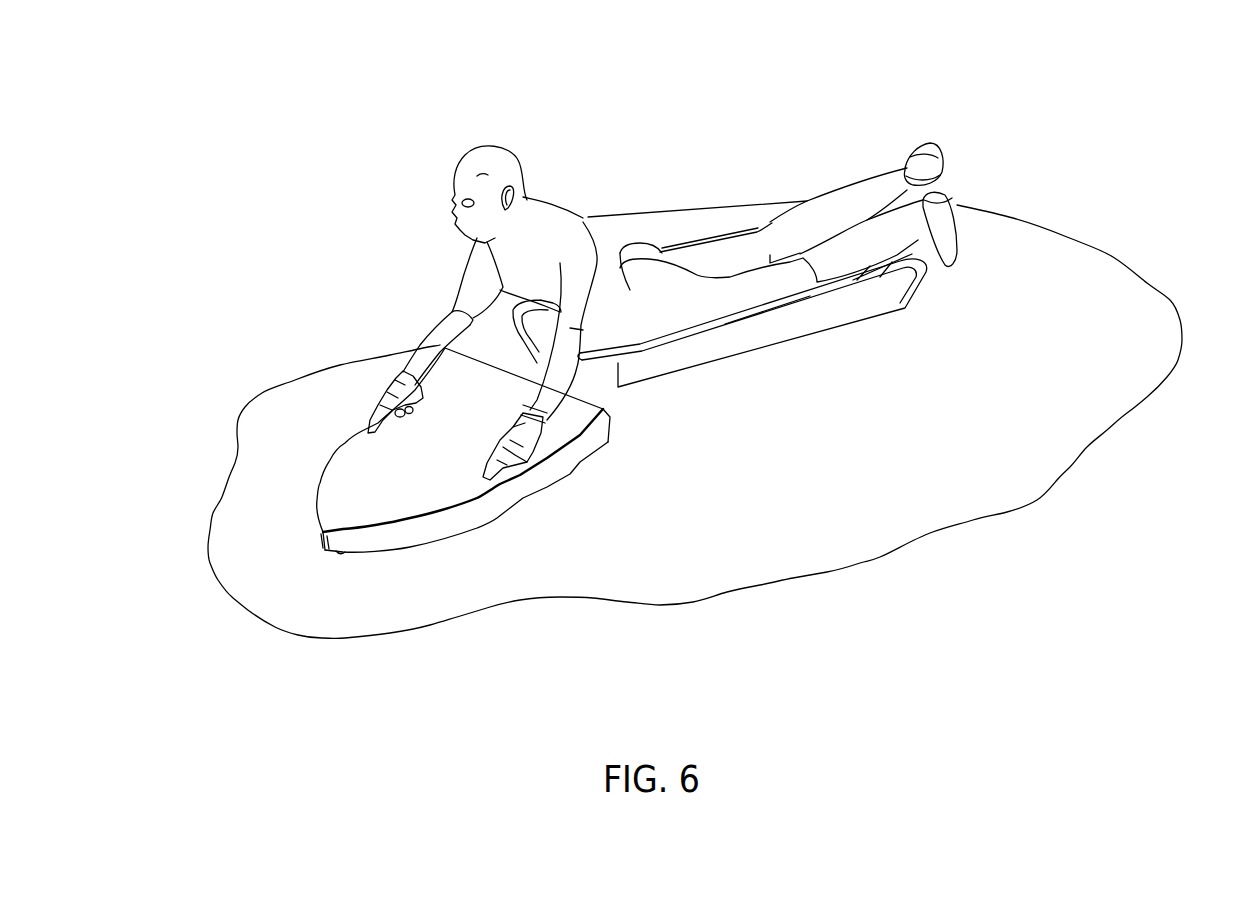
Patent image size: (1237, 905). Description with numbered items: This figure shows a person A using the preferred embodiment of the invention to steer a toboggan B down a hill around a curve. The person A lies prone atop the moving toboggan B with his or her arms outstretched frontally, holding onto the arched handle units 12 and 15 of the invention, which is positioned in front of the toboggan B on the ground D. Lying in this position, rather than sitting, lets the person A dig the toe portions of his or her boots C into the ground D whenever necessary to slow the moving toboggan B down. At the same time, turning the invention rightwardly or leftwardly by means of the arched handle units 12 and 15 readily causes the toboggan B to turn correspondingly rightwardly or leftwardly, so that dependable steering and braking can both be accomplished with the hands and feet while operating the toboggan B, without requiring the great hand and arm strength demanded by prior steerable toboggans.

The person A is at (548, 210).
The toboggan B is at (760, 337).
The boots C is at (900, 168).
The ground D is at (990, 365).
The arched handle unit 12 is at (508, 462).
The arched handle unit 15 is at (373, 397).